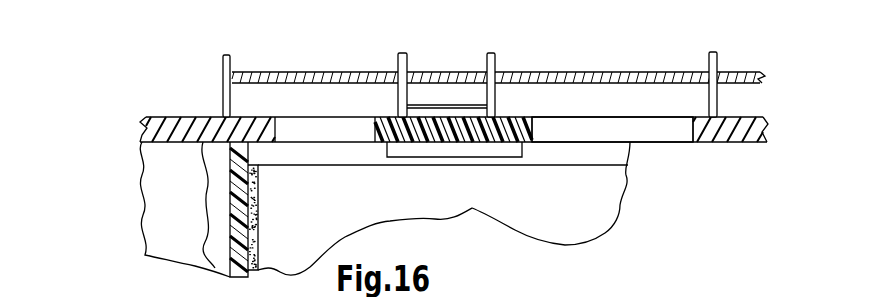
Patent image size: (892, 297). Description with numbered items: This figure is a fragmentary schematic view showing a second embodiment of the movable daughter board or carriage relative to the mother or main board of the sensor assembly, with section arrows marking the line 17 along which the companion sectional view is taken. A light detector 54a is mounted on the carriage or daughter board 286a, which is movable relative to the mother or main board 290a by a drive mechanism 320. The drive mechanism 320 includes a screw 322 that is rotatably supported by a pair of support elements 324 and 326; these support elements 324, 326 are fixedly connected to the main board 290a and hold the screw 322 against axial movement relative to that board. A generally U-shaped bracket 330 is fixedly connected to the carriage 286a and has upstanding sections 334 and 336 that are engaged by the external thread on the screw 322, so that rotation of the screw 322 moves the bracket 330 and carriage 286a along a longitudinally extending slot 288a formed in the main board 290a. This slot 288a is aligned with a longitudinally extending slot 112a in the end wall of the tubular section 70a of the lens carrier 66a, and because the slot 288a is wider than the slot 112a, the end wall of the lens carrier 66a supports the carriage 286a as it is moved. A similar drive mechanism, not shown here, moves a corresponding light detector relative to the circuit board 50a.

The section line 17- 17 is at (112, 27).
The circuit board 50a is at (141, 110).
The light detector 54a is at (450, 150).
The lens carrier 66a is at (218, 200).
The tubular section 70a is at (218, 242).
The slot 112a is at (548, 147).
The carriage or daughter board 286a is at (498, 132).
The slot 288a is at (642, 125).
The mother or main board 290a is at (746, 128).
The drive mechanism 320 is at (474, 63).
The screw 322 is at (318, 72).
The support element 324 is at (222, 67).
The support element 326 is at (742, 46).
The U-shaped bracket 330 is at (476, 63).
The upstanding section 334 is at (408, 60).
The upstanding section 336 is at (487, 60).